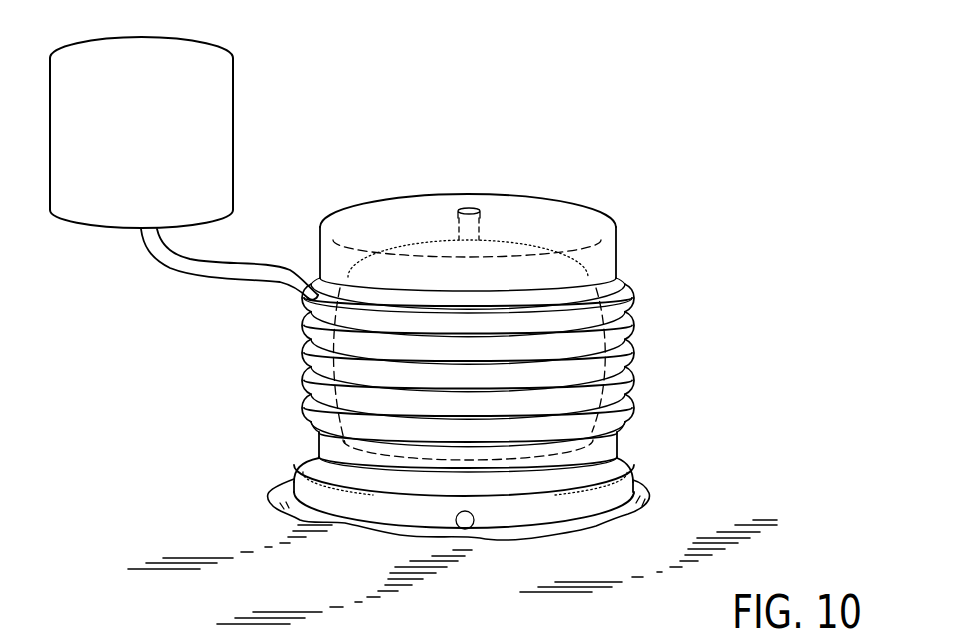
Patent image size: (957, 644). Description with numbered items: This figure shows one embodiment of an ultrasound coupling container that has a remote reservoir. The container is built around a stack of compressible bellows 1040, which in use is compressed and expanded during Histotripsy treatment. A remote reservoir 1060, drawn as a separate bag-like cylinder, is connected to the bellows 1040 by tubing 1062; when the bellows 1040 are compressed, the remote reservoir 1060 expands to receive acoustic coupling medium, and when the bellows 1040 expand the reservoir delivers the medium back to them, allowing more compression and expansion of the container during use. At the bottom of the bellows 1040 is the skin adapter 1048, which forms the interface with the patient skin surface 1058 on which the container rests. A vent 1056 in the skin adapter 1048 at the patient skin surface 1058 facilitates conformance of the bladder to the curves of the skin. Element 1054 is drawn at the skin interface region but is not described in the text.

The remote reservoir 1060 is at (227, 118).
The tubing 1062 is at (167, 260).
The bellows 1040 is at (630, 298).
The skin adapter 1048 is at (317, 498).
The sealant 1054 is at (643, 488).
The vent 1056 is at (466, 529).
The patient skin surface 1058 is at (716, 522).